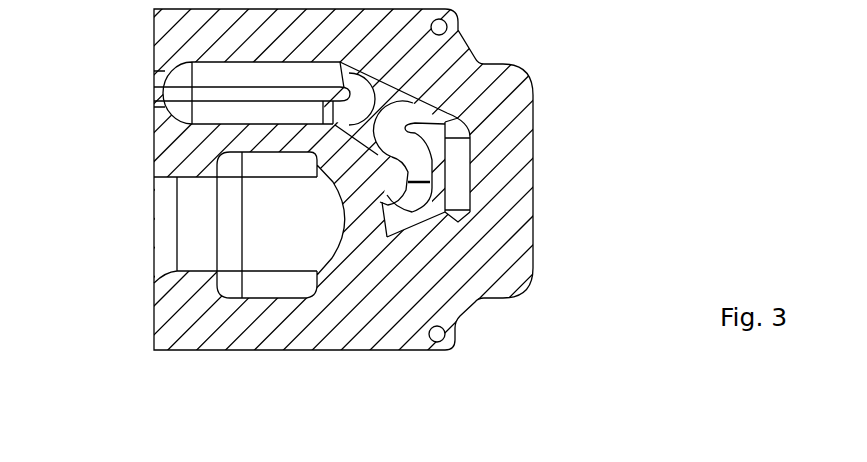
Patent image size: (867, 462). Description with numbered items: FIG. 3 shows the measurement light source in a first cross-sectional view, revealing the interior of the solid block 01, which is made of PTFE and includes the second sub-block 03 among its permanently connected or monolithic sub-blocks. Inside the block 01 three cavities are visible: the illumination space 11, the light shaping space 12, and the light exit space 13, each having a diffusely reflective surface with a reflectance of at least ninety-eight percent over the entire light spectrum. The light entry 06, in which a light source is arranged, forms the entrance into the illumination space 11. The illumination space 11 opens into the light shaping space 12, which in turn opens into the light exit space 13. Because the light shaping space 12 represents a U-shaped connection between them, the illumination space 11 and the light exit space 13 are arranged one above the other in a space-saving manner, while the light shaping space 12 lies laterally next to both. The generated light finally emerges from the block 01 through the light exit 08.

The solid block 01 is at (524, 259).
The second sub-block 03 is at (458, 77).
The light entry 06 is at (160, 80).
The light exit 08 is at (165, 230).
The illumination space 11 is at (222, 78).
The light shaping space 12 is at (452, 176).
The light exit space 13 is at (257, 239).